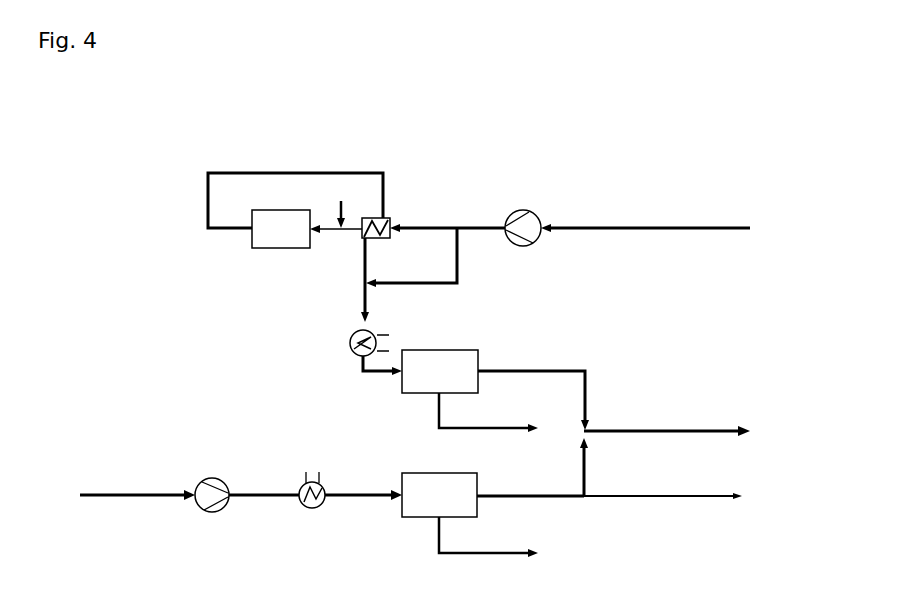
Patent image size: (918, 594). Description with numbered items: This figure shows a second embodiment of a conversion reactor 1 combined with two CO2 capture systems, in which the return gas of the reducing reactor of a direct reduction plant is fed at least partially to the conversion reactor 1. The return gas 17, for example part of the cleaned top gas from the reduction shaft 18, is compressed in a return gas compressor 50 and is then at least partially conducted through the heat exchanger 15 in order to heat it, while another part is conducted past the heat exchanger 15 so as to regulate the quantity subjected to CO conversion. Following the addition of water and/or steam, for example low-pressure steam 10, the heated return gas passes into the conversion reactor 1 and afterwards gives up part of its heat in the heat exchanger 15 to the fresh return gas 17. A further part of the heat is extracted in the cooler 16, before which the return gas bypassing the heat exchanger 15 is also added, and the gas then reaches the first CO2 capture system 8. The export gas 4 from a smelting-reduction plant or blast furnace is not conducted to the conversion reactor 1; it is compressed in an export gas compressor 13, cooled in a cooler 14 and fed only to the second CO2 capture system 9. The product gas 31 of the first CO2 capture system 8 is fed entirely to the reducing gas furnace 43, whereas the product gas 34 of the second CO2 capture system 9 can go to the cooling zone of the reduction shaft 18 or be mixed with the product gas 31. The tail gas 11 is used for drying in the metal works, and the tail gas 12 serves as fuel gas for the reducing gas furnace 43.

The conversion reactor 1 is at (295, 210).
The export gas 4 is at (125, 493).
The first CO2 capture system 8 is at (440, 371).
The second CO2 capture system 9 is at (439, 495).
The low-pressure steam 10 is at (341, 205).
The tail gas 11 is at (437, 415).
The tail gas 12 is at (437, 535).
The export gas compressor 13 is at (220, 478).
The cooler 14 is at (304, 505).
The heat exchanger 15 is at (388, 217).
The cooler 16 is at (348, 344).
The return gas 17 is at (555, 264).
The reduction shaft 18 is at (630, 498).
The product gas 31 is at (548, 371).
The product gas 34 is at (566, 499).
The reducing gas furnace 43 is at (683, 434).
The return gas compressor 50 is at (538, 204).